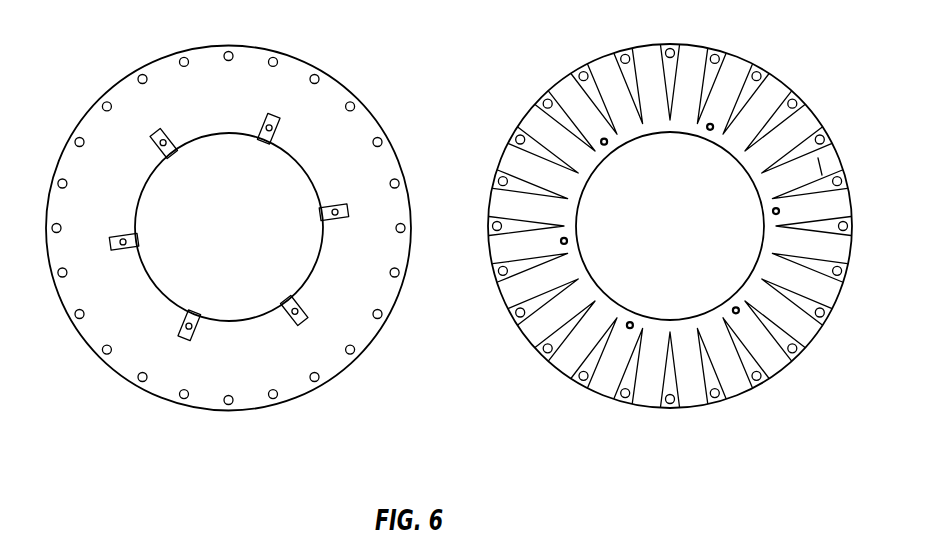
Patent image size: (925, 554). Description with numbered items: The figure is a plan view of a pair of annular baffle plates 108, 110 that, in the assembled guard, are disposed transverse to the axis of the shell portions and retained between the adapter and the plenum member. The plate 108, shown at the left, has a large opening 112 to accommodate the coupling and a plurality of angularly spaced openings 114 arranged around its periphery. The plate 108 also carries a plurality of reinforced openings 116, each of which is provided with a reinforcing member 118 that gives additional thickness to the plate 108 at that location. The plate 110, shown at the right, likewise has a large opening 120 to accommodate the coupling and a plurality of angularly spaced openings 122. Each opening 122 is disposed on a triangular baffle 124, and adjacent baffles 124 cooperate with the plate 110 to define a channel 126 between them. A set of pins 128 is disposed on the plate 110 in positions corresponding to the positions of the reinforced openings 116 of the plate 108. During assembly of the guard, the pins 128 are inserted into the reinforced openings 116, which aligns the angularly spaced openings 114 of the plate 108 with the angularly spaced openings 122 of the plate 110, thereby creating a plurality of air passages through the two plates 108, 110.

The annular baffle plate 108 is at (165, 40).
The annular baffle plate 110 is at (716, 38).
The large opening 112 is at (303, 170).
The angularly spaced openings 114 is at (100, 103).
The reinforced openings 116 is at (262, 139).
The reinforcing member 118 is at (268, 115).
The large opening 120 is at (743, 170).
The angularly spaced openings 122 is at (792, 103).
The triangular baffle 124 is at (757, 82).
The channel 126 is at (818, 158).
The pins 128 is at (733, 307).